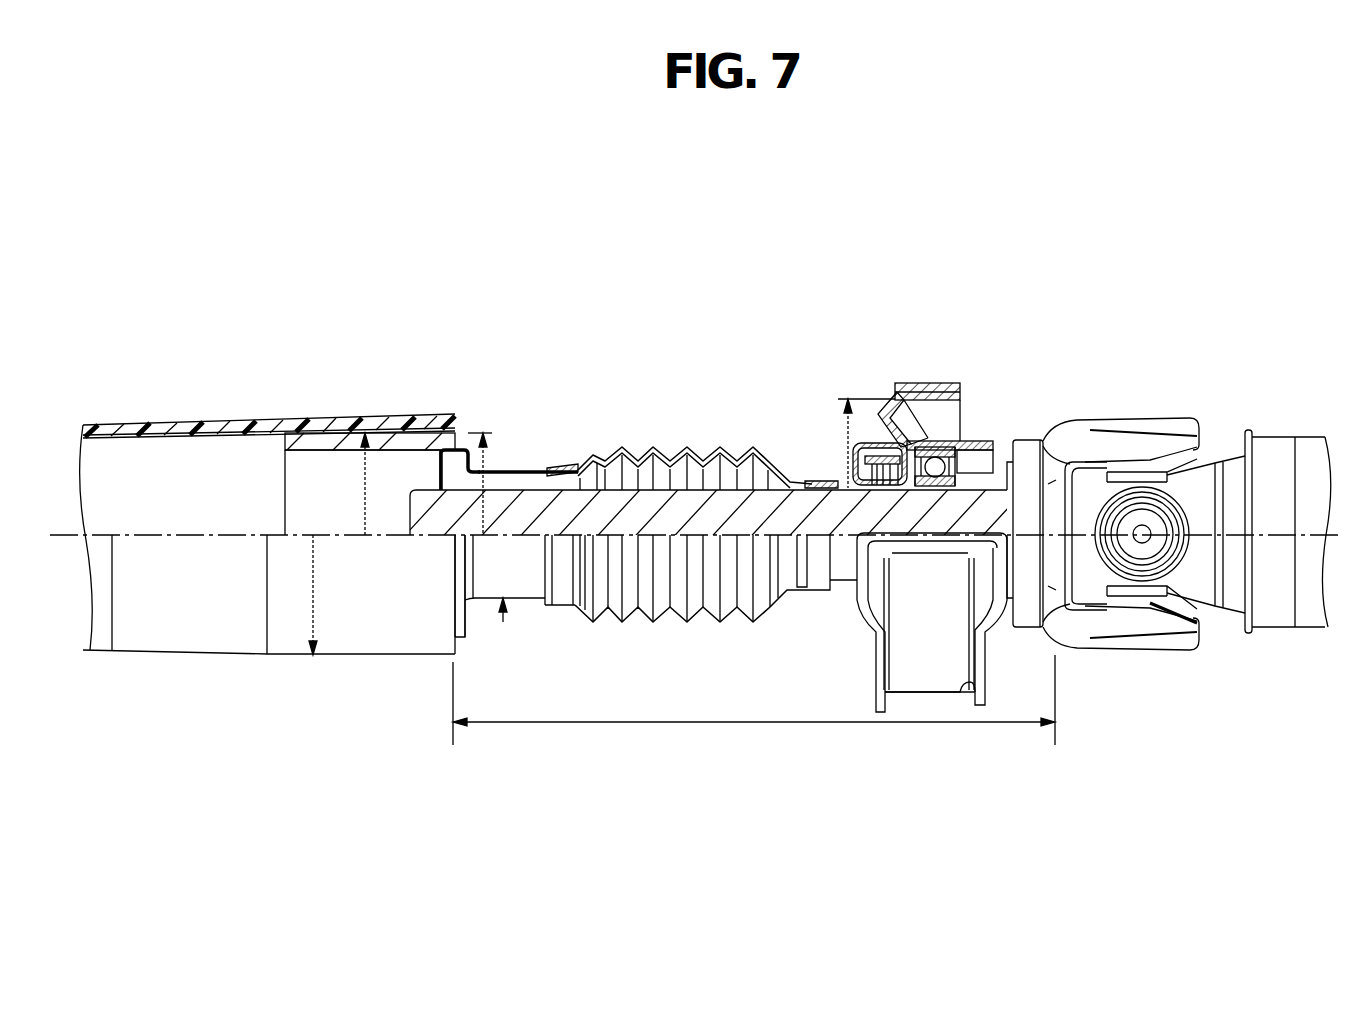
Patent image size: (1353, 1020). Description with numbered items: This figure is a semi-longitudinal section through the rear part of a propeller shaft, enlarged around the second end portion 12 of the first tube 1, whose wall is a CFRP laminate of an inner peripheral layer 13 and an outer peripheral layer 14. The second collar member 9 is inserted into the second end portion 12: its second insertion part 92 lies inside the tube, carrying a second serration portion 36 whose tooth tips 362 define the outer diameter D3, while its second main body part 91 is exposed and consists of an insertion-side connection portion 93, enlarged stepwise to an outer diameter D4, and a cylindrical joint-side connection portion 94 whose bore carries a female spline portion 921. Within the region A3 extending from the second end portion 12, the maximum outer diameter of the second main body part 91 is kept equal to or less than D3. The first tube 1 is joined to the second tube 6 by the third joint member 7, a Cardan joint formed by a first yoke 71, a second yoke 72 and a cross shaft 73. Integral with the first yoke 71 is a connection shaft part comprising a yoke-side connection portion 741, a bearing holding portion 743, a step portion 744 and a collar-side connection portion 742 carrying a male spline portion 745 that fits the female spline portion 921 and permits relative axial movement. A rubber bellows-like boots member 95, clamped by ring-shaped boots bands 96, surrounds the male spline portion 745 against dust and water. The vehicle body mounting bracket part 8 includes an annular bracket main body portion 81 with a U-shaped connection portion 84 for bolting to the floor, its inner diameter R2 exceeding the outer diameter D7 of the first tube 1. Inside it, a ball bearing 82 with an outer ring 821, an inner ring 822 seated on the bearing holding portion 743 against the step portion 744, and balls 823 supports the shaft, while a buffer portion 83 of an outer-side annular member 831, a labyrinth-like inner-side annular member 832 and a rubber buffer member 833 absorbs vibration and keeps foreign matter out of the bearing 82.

The first tube 1 is at (212, 662).
The second tube 6 is at (1308, 418).
The third joint member 7 is at (1129, 552).
The vehicle body mounting bracket part 8 is at (956, 532).
The second collar member 9 is at (498, 612).
The second end portion 12 is at (372, 658).
The inner peripheral layer 13 is at (290, 430).
The outer peripheral layer 14 is at (266, 426).
The second serration portion 36 is at (325, 360).
The tooth tips 362 is at (340, 431).
The first yoke 71 is at (1117, 444).
The second yoke 72 is at (1203, 486).
The cross shaft 73 is at (1143, 525).
The yoke-side connection portion 741 is at (995, 430).
The collar-side connection portion 742 is at (704, 452).
The bearing holding portion 743 is at (925, 492).
The step portion 744 is at (940, 490).
The male spline portion 745 is at (671, 463).
The bracket main body portion 81 is at (875, 706).
The bearing 82 is at (968, 325).
The buffer portion 83 is at (812, 302).
The connection portion 84 is at (943, 674).
The second main body part 91 is at (508, 378).
The second insertion part 92 is at (380, 434).
The insertion-side connection portion 93 is at (462, 448).
The joint-side connection portion 94 is at (512, 470).
The boots member 95 is at (640, 450).
The boots bands 96 is at (570, 465).
The female spline portion 921 is at (516, 488).
The outer ring 821 is at (960, 432).
The inner ring 822 is at (1040, 452).
The balls 823 is at (1000, 442).
The outer-side annular member 831 is at (905, 398).
The inner-side annular member 832 is at (917, 390).
The buffer member 833 is at (882, 410).
The outer diameter of tooth tips D3 is at (364, 486).
The outer diameter of insertion-side connection portion D4 is at (505, 616).
The outer diameter of first tube D7 is at (314, 589).
The region A3 is at (688, 730).
The inner diameter of bracket main body portion R2 is at (838, 399).
The axis Z is at (1334, 532).